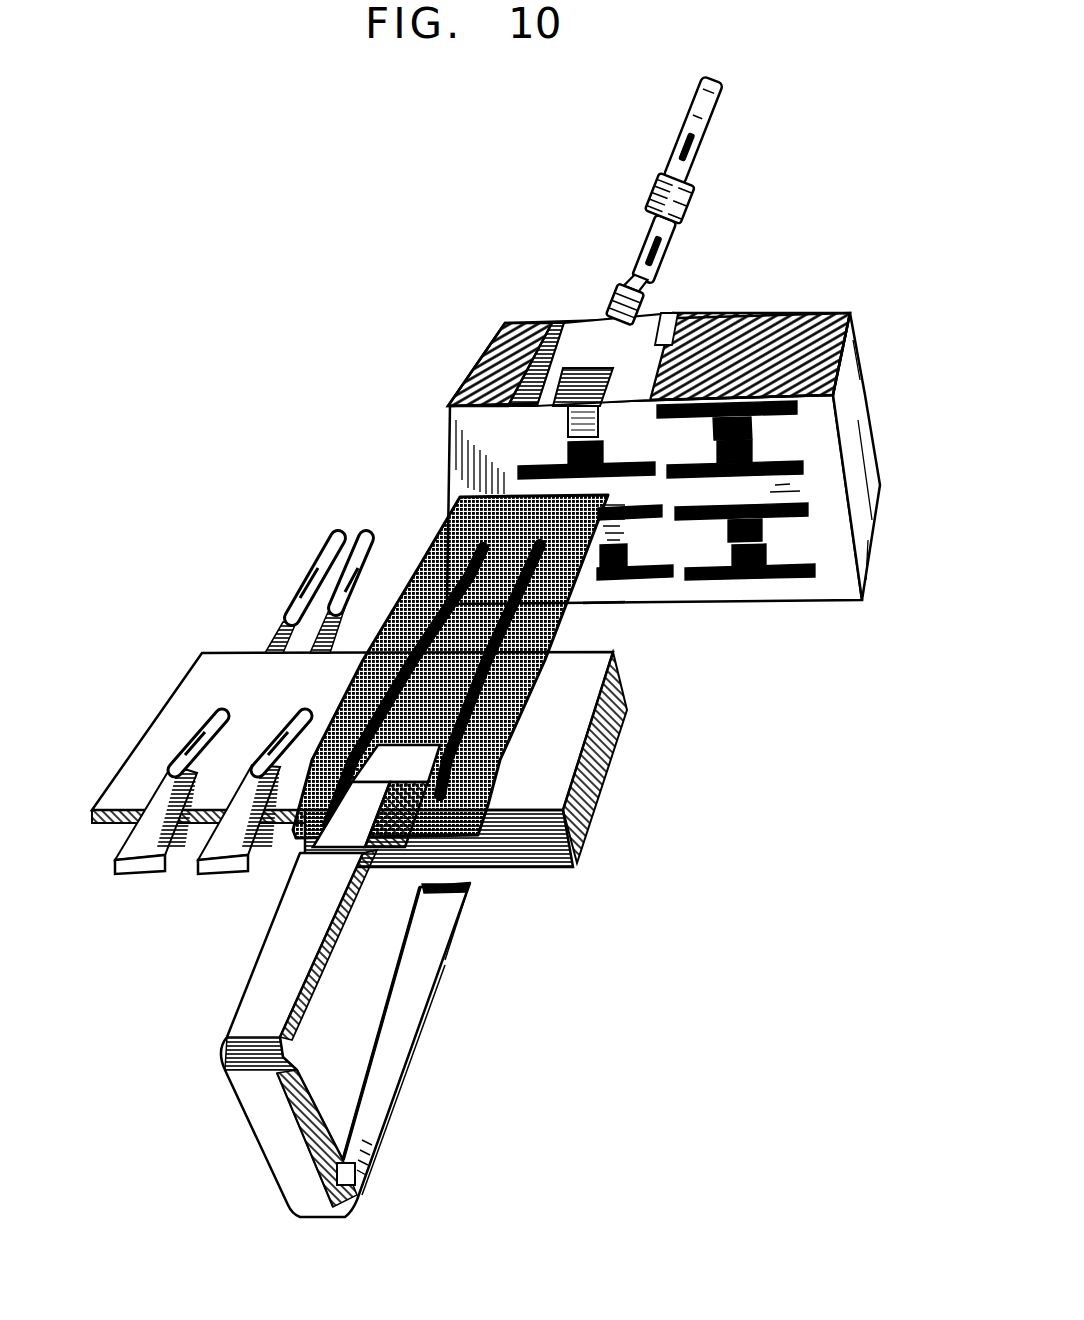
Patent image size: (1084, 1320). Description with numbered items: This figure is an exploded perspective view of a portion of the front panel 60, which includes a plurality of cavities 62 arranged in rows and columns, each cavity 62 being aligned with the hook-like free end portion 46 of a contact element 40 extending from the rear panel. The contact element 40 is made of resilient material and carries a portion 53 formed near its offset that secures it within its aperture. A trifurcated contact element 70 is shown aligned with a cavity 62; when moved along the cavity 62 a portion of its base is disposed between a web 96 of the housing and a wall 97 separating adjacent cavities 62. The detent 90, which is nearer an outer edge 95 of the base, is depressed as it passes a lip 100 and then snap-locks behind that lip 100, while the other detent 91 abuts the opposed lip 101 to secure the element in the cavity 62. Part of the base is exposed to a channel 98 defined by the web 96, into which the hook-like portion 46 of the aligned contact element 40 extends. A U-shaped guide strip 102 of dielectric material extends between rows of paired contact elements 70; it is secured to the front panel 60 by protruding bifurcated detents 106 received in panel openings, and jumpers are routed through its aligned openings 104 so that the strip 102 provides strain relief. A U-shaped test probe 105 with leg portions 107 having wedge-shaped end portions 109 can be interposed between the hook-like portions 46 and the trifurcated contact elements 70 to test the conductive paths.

The contact element 40 is at (697, 93).
The portion of the contact element 53 is at (657, 212).
The free end portion 46 is at (623, 292).
The front panel 60 is at (833, 597).
The cavity 62 is at (490, 378).
The channel 98 is at (593, 363).
The web 96 is at (607, 345).
The lip 100 is at (502, 335).
The opposed lip 101 is at (658, 327).
The wall 97 is at (765, 490).
The outer edge 95 is at (470, 487).
The detent 91 is at (606, 603).
The detent 90 is at (460, 500).
The trifurcated contact element 70 is at (443, 547).
The guide strip 102 is at (192, 683).
The bifurcated detent 106 is at (318, 550).
The opening 104 is at (188, 853).
The leg portion 107 is at (242, 1020).
The wedge-shaped end portion 109 is at (448, 963).
The test probe 105 is at (400, 1090).